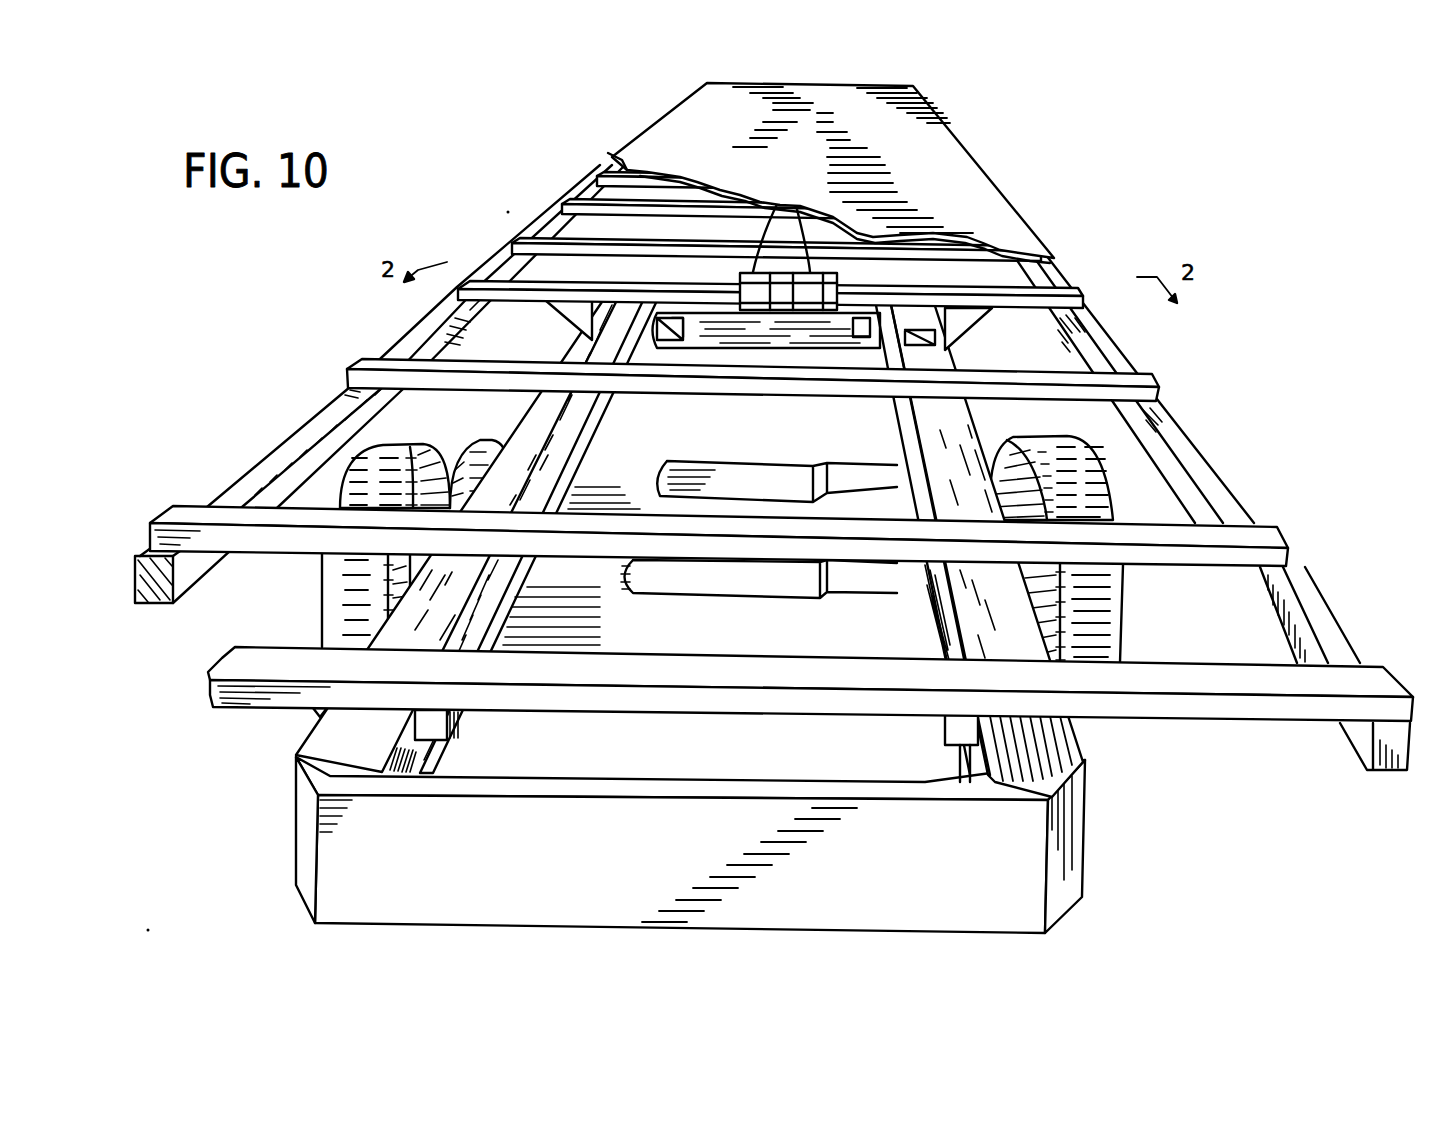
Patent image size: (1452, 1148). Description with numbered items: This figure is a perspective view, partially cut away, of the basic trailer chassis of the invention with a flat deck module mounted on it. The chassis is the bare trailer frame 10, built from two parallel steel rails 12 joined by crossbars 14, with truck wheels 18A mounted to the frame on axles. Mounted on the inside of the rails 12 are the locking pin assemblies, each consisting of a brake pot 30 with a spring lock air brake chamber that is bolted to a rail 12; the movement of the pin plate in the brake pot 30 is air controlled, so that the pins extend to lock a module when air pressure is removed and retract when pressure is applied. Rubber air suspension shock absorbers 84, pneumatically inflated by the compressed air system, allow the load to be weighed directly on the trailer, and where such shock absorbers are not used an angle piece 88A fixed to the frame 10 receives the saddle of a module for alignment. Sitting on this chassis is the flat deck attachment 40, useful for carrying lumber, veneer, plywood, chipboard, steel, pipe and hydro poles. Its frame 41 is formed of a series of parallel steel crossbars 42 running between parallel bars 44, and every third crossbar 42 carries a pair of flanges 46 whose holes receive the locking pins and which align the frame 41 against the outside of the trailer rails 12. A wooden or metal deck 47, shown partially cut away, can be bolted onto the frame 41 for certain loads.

The frame 10 is at (619, 832).
The rails 12 is at (322, 732).
The crossbars 14 is at (668, 797).
The truck wheels 18A is at (320, 575).
The brake pot 30 is at (660, 342).
The flat deck attachment 40 is at (774, 474).
The frame 41 is at (1195, 463).
The crossbars 42 is at (468, 282).
The parallel bars 44 is at (410, 340).
The flanges 46 is at (560, 308).
The deck 47 is at (957, 177).
The shock absorbers 84 is at (790, 180).
The angle piece 88A is at (790, 350).